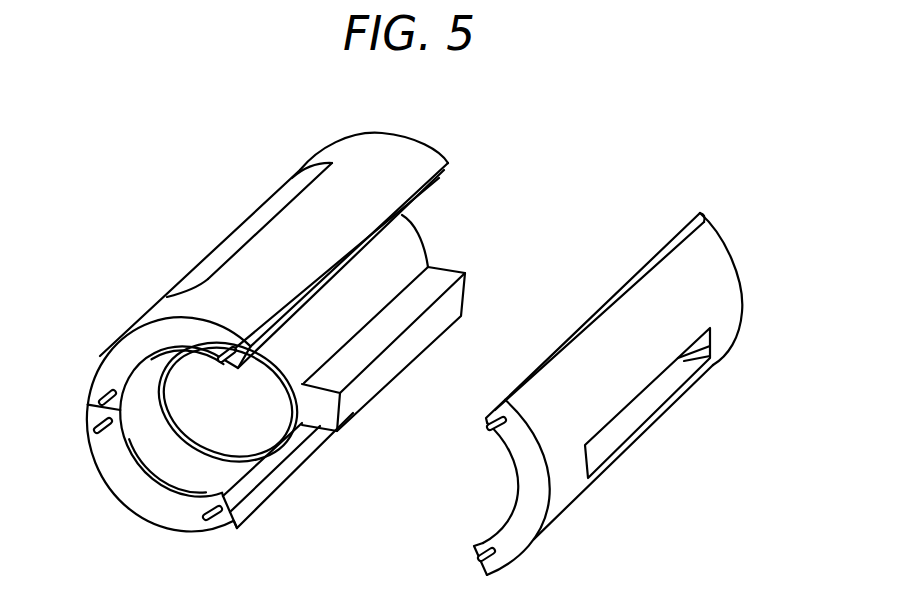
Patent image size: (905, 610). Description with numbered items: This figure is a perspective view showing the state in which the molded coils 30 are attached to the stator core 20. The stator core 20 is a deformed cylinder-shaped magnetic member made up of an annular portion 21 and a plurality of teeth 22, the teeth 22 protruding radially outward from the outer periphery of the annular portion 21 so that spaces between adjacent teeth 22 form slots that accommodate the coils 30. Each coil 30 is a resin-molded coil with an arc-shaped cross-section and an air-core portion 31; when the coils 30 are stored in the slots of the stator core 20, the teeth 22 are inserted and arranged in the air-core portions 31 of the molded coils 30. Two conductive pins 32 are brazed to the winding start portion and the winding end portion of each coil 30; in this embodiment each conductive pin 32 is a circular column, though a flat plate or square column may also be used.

The stator core 20 is at (440, 278).
The annular portion 21 is at (405, 253).
The teeth 22 is at (413, 342).
The coil 30 is at (682, 262).
The air-core portion 31 is at (243, 237).
The conductive pin 32 is at (102, 417).